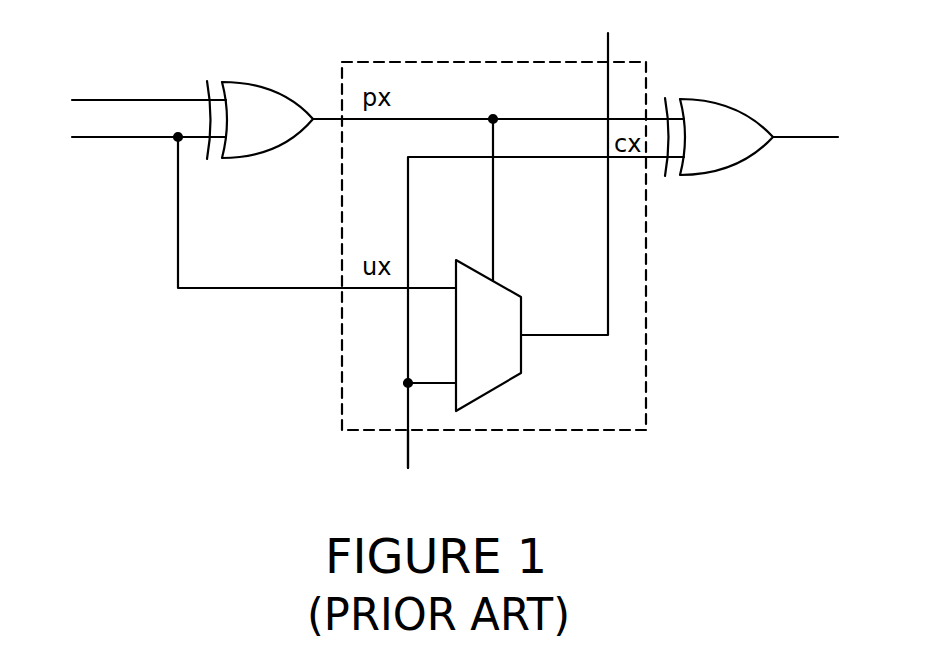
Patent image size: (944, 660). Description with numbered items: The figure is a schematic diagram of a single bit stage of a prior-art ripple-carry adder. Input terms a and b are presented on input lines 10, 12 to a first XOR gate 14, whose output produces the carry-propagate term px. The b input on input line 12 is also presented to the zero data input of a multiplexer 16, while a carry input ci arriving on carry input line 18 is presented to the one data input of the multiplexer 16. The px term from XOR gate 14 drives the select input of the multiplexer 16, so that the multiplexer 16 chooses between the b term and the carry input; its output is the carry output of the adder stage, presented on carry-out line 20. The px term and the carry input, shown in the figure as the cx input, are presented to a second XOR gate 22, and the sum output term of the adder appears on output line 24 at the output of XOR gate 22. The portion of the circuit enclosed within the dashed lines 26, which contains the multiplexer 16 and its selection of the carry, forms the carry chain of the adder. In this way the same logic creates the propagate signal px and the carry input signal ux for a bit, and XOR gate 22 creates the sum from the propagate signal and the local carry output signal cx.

The input line 10 is at (136, 84).
The input line 12 is at (251, 205).
The XOR gate 14 is at (260, 99).
The multiplexer 16 is at (496, 326).
The carry input line 18 is at (409, 444).
The carry-out line 20 is at (592, 167).
The XOR gate 22 is at (719, 118).
The output line 24 is at (821, 121).
The dashed lines 26 is at (467, 246).